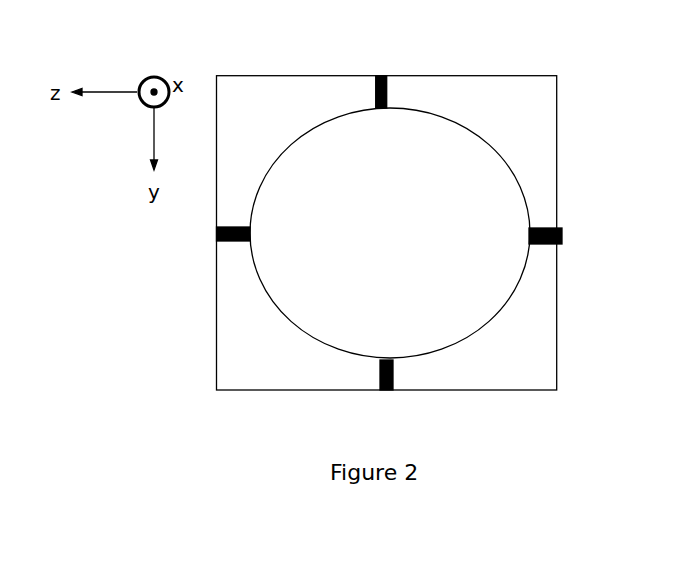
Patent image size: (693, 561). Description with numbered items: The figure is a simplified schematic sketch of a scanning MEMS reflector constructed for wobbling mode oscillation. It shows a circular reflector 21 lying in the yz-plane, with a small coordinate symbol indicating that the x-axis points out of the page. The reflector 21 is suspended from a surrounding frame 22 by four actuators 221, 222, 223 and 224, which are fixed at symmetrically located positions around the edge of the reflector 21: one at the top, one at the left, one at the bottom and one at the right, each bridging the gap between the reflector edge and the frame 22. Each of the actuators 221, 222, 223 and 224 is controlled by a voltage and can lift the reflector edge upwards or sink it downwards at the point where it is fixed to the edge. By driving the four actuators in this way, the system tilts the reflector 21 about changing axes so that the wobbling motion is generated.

The circular reflector 21 is at (468, 154).
The frame 22 is at (566, 311).
The actuator 221 is at (366, 95).
The actuator 222 is at (223, 248).
The actuator 223 is at (404, 379).
The actuator 224 is at (552, 217).